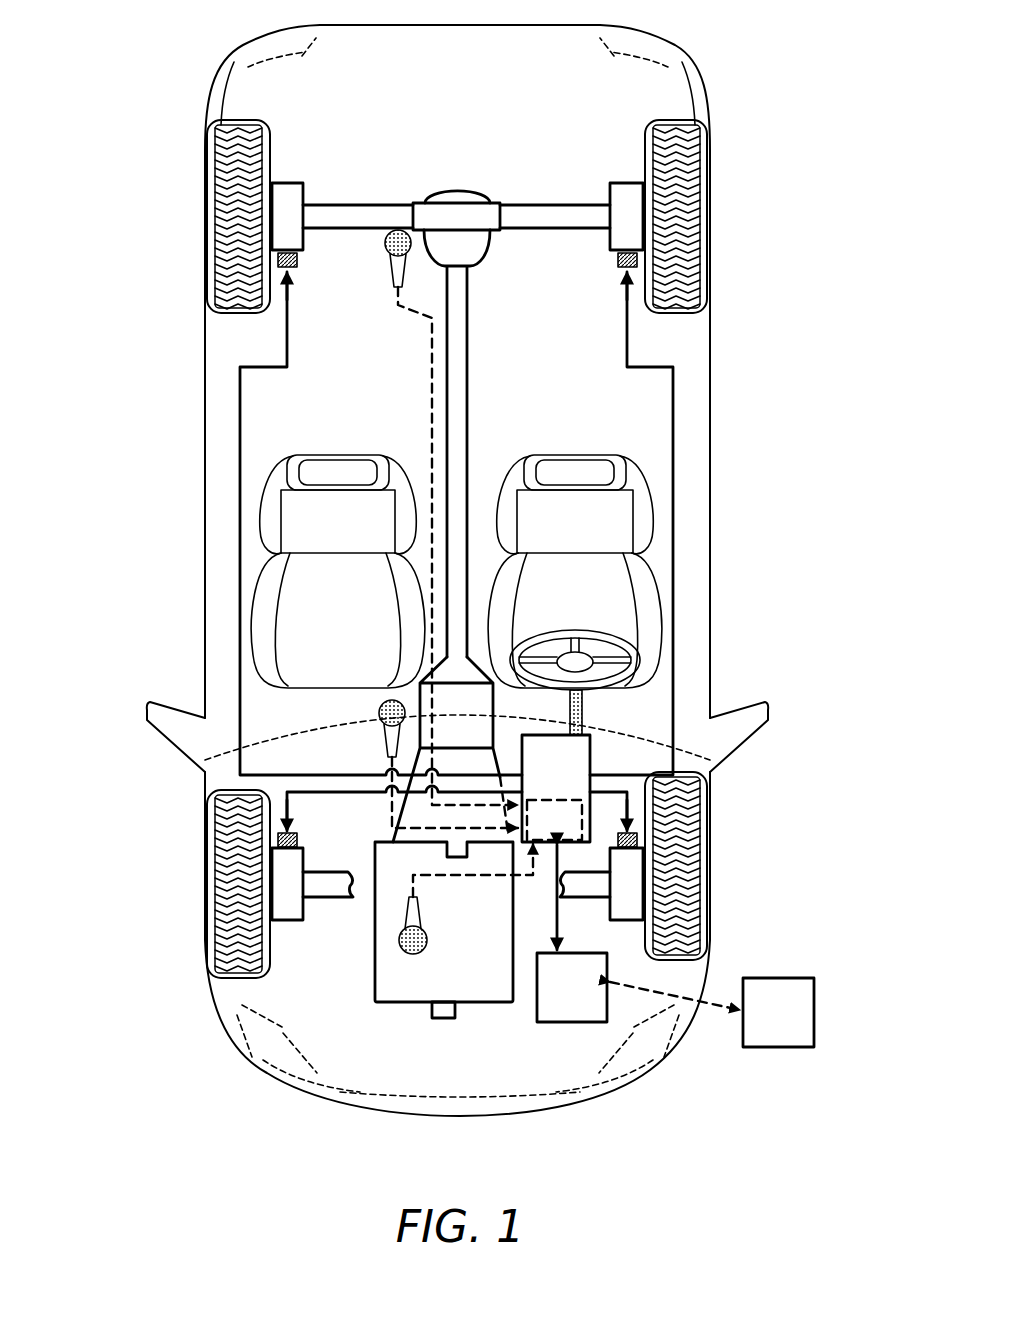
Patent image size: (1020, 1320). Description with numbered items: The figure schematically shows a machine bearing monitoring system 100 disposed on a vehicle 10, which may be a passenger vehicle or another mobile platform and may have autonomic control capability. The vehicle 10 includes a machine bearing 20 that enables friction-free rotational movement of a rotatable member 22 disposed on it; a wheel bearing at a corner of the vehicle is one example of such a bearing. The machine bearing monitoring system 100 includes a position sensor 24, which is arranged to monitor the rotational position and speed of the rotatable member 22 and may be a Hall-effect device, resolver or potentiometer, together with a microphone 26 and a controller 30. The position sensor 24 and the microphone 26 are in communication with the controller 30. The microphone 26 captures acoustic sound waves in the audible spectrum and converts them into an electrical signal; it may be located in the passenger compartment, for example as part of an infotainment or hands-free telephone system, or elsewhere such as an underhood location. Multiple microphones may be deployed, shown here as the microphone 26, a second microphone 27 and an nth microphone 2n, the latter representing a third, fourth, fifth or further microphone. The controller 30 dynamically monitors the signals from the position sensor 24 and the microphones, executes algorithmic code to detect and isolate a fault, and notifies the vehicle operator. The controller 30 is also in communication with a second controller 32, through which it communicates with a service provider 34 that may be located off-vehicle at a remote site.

The vehicle 10 is at (160, 66).
The machine bearing 20 is at (303, 185).
The rotatable member 22 is at (456, 1011).
The position sensor 24 is at (299, 262).
The nth microphone 2n is at (389, 271).
The microphone 26 is at (418, 904).
The second microphone 27 is at (387, 748).
The controller 30 is at (571, 769).
The machine bearing monitoring system 100 is at (575, 836).
The second controller 32 is at (587, 989).
The service provider 34 is at (793, 1014).